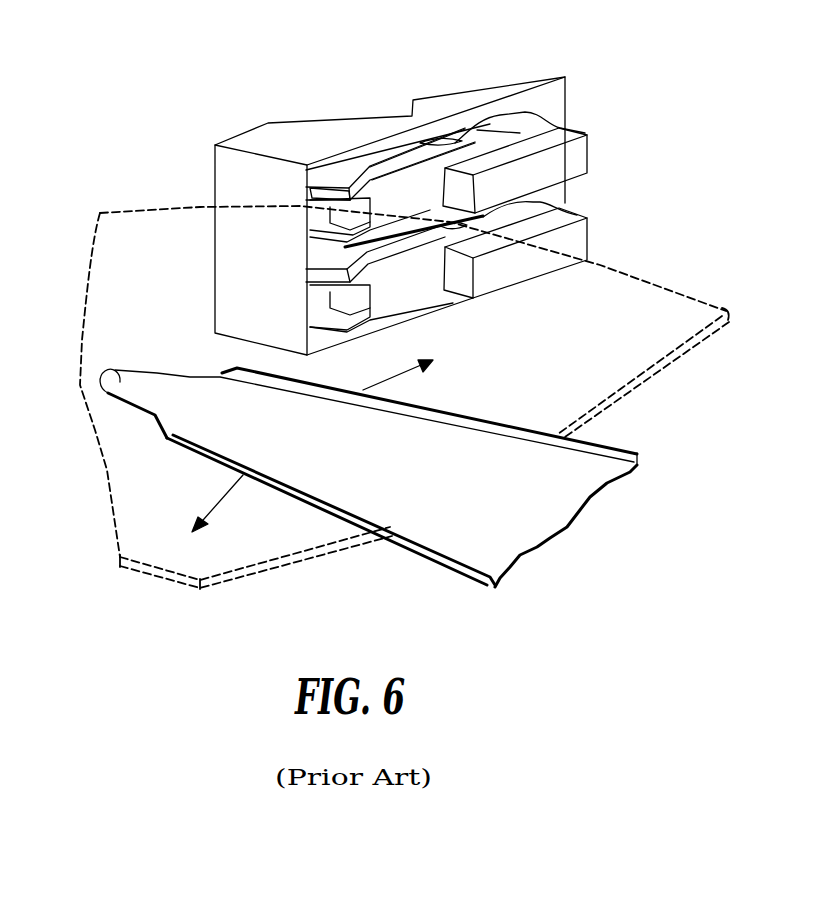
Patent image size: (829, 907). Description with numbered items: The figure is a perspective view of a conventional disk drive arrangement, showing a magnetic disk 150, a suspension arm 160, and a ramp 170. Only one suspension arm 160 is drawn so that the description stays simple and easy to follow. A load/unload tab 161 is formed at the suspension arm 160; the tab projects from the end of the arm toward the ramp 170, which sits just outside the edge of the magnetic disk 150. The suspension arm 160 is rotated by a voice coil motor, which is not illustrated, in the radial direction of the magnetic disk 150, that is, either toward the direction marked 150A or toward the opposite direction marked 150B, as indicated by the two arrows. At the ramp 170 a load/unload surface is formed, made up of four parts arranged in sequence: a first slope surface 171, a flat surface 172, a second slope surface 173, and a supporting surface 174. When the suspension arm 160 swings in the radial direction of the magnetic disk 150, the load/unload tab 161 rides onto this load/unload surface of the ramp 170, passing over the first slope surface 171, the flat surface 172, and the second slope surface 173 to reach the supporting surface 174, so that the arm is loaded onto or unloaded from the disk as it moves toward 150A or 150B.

The magnetic disk 150 is at (660, 300).
The radial direction 150A is at (217, 497).
The radial direction 150B is at (395, 372).
The suspension arm 160 is at (545, 520).
The load/unload tab 161 is at (120, 381).
The ramp 170 is at (258, 142).
The first slope surface 171 is at (333, 183).
The flat surface 172 is at (381, 160).
The second slope surface 173 is at (452, 142).
The supporting surface 174 is at (487, 135).